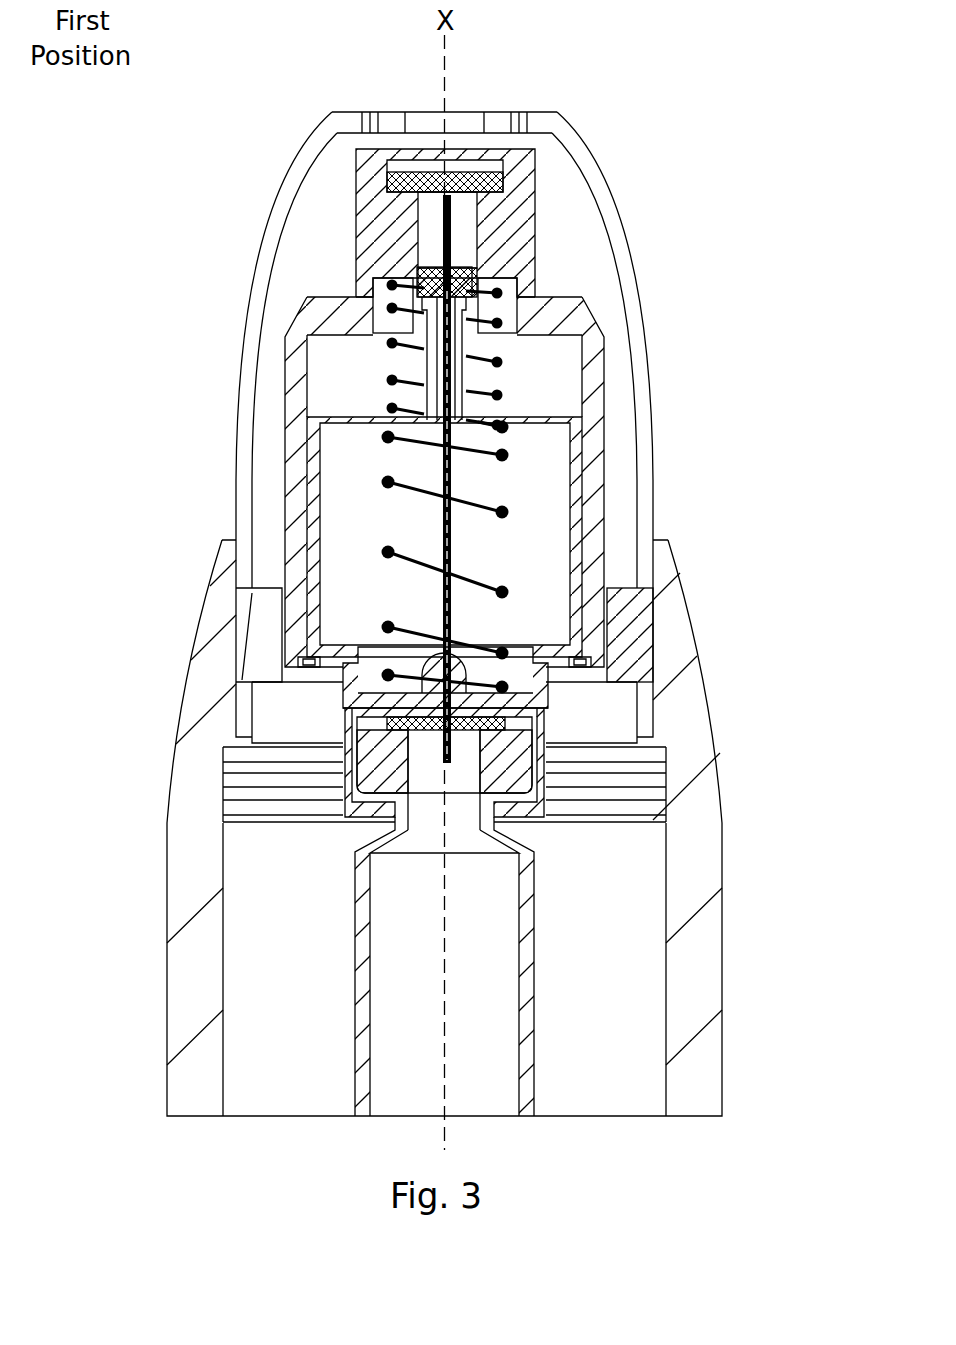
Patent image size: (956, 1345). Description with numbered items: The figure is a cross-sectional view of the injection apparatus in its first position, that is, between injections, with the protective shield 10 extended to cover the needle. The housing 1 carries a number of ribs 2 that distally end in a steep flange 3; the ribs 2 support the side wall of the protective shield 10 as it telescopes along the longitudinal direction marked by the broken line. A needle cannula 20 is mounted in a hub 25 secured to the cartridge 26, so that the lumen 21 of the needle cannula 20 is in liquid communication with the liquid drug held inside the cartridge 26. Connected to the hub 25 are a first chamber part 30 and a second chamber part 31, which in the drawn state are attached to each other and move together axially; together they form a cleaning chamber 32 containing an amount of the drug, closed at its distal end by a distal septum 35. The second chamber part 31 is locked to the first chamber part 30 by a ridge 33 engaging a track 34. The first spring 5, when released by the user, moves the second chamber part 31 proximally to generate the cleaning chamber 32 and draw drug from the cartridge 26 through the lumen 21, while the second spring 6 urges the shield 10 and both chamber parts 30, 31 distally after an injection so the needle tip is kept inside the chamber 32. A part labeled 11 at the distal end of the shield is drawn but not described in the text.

The housing 1 is at (200, 975).
The ribs 2 is at (222, 805).
The steep flange 3 is at (222, 737).
The first spring 5 is at (497, 362).
The second spring 6 is at (505, 512).
The protective shield 10 is at (246, 148).
The dome / top cover 11 is at (465, 118).
The needle cannula 20 is at (438, 543).
The lumen 21 is at (437, 242).
The hub 25 is at (530, 702).
The cartridge 26 is at (527, 1068).
The first chamber part 30 is at (293, 357).
The second chamber part 31 is at (317, 462).
The cleaning chamber 32 is at (467, 237).
The ridge 33 is at (290, 653).
The track 34 is at (597, 650).
The distal septum 35 is at (380, 170).